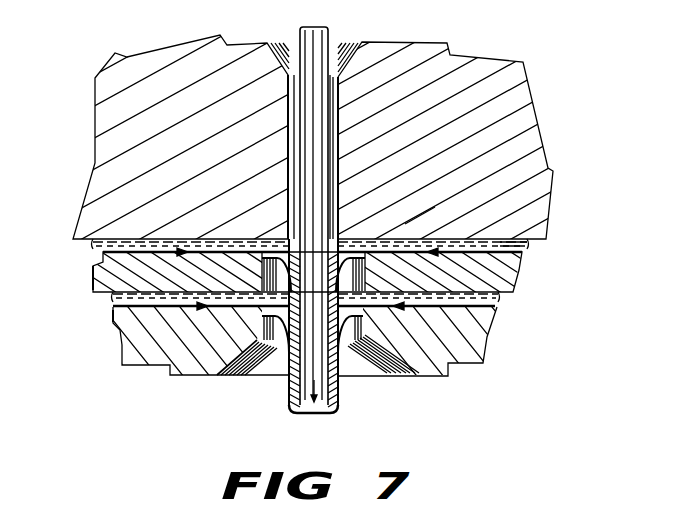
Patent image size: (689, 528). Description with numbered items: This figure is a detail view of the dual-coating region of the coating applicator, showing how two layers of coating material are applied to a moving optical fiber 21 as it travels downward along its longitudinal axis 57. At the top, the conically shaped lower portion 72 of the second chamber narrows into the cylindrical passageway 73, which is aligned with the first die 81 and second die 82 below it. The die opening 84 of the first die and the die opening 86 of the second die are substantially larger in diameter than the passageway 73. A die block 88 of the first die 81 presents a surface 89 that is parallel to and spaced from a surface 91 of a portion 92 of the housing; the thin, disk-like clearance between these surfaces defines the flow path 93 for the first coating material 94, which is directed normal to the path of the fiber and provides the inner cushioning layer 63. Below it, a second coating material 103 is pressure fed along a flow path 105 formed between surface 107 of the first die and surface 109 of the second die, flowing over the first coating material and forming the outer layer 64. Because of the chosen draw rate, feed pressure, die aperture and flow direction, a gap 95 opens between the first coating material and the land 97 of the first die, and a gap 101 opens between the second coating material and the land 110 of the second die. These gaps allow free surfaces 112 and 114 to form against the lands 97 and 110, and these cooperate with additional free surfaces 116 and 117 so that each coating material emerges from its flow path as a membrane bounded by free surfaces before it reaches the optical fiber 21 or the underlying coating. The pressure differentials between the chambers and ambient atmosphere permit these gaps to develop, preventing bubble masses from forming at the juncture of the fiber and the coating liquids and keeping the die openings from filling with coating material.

The optical fiber 21 is at (325, 44).
The lower portion of the second chamber 72 is at (343, 57).
The longitudinal axis 57 is at (294, 121).
The cylindrical passageway 73 is at (333, 123).
The portion of the housing 92 is at (533, 156).
The surface of the housing portion 91 is at (428, 224).
The first coating material 94 is at (124, 235).
The flow path for the first coating material 93 is at (173, 239).
The free surface 116 is at (288, 222).
The die opening of the first die 84 is at (358, 238).
The land of the first die 97 is at (378, 250).
The surface of the die block 89 is at (503, 240).
The first die 81 is at (82, 280).
The free surface 117 is at (240, 275).
The free surface 112 is at (262, 279).
The gap 95 is at (365, 282).
The surface of the first die 107 is at (425, 288).
The flow path for the second coating material 105 is at (455, 305).
The die block 88 is at (514, 284).
The second die 82 is at (112, 332).
The second coating material 103 is at (138, 311).
The free surface 114 is at (259, 316).
The die opening of the second die 86 is at (289, 339).
The land of the second die 110 is at (366, 320).
The surface of the second die 109 is at (474, 314).
The gap 101 is at (386, 341).
The coating material layer 64 is at (288, 406).
The cushioning layer 63 is at (340, 402).